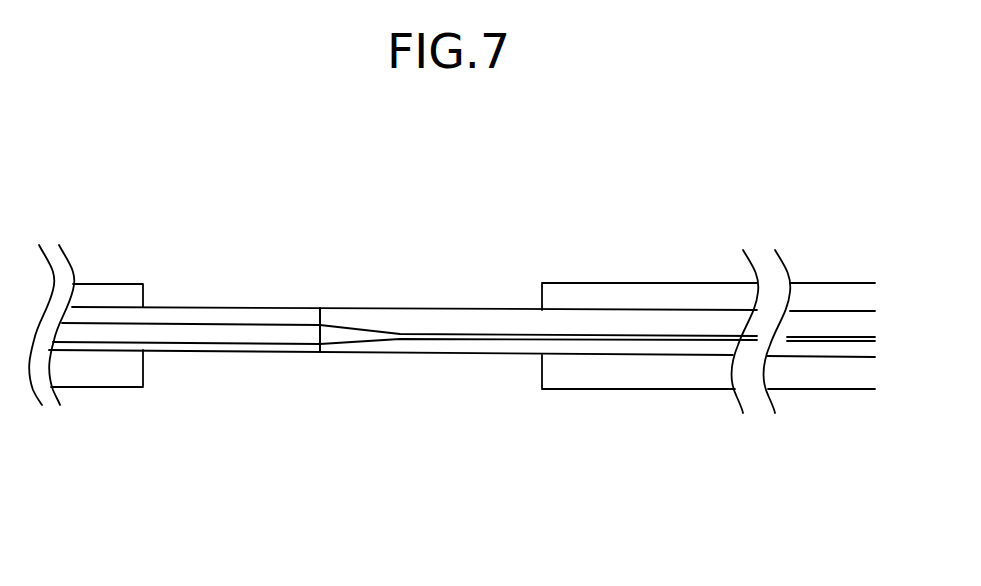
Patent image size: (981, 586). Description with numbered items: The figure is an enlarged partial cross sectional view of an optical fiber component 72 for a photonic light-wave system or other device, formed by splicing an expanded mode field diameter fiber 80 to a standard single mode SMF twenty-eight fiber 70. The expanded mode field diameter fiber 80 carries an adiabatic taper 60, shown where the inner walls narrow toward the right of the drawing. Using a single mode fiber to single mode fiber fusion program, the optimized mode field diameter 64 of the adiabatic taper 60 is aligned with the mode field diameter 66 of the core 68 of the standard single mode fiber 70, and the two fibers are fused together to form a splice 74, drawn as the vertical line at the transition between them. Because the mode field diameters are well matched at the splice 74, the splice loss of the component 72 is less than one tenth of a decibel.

The adiabatic taper 60 is at (336, 337).
The optimized mode field diameter 64 is at (320, 328).
The mode field diameter 66 is at (320, 338).
The core 68 is at (235, 332).
The standard single mode SMF 28 fiber 70 is at (138, 428).
The component 72 is at (352, 195).
The splice 74 is at (320, 352).
The expanded mode field diameter fiber 80 is at (462, 388).